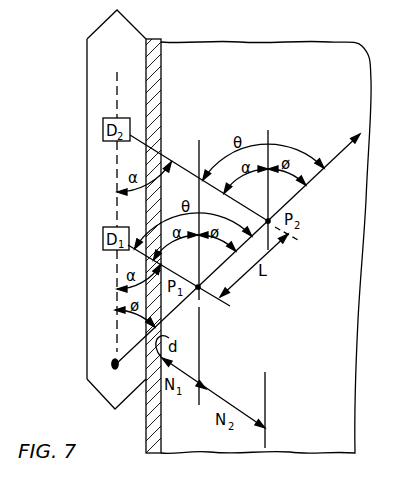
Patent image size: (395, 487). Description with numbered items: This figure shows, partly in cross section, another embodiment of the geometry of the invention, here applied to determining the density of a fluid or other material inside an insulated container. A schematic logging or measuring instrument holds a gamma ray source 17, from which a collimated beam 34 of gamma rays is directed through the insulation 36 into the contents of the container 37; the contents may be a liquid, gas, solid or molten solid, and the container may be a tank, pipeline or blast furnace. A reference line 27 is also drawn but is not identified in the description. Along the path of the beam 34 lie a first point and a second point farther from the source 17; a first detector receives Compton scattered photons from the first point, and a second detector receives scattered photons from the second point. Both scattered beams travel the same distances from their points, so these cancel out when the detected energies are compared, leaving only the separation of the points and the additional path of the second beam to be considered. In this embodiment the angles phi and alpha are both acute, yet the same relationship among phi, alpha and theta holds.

The source 17 is at (112, 364).
The optical axis 27 is at (117, 178).
The collimated beam of gamma rays 34 is at (341, 151).
The insulation 36 is at (152, 40).
The container 37 is at (246, 42).